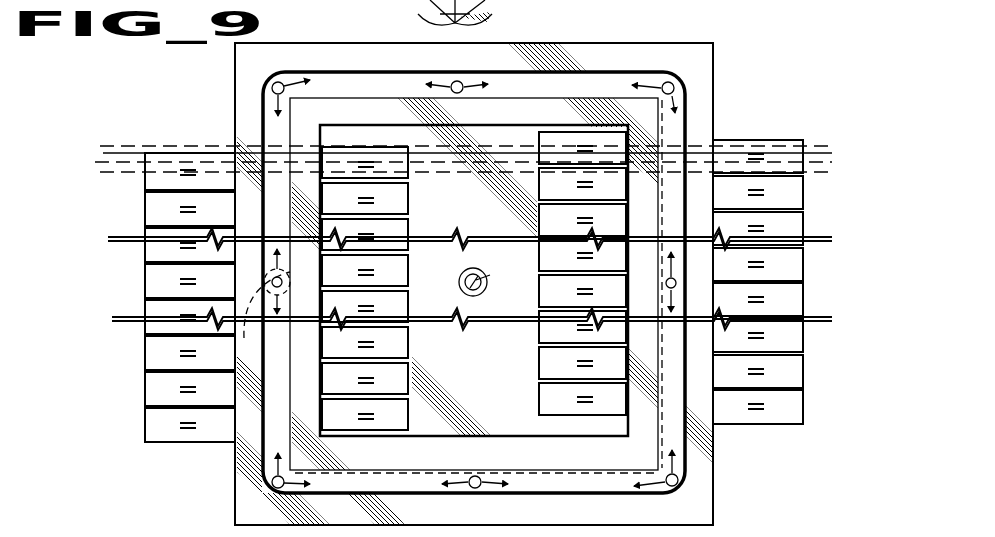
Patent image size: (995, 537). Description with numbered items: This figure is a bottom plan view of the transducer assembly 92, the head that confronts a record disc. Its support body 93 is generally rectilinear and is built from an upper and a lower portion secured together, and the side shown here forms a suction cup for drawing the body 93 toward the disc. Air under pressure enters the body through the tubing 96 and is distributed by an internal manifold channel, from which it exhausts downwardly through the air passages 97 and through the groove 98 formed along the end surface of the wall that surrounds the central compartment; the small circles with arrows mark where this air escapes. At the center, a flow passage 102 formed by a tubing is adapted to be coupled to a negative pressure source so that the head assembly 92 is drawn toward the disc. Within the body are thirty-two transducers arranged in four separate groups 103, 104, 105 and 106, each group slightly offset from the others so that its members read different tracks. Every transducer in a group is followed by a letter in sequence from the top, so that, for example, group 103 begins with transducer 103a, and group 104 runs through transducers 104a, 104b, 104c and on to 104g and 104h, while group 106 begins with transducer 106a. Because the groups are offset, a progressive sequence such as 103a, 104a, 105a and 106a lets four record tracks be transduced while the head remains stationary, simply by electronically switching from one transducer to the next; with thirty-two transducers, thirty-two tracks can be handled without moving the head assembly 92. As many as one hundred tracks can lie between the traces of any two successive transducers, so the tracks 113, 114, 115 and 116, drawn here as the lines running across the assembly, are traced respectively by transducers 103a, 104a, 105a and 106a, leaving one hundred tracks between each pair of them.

The transducer assembly 92 is at (730, 48).
The support body 93 is at (700, 100).
The tubing 96 is at (244, 338).
The air passages 97 is at (673, 96).
The groove 98 is at (605, 80).
The flow passage 102 is at (481, 270).
The group of transducer elements 103 is at (544, 260).
The transducer 103a is at (562, 133).
The group of transducer elements 104 is at (807, 266).
The transducer 104a is at (747, 140).
The transducer 104b is at (778, 198).
The transducer 104c is at (778, 230).
The transducer 104g is at (778, 375).
The transducer 104h is at (791, 407).
The group of transducer elements 105 is at (418, 430).
The group of transducer elements 106 is at (127, 274).
The transducer 106a is at (187, 145).
The track 113 is at (130, 146).
The track 114 is at (124, 153).
The track 115 is at (133, 164).
The track 116 is at (133, 174).